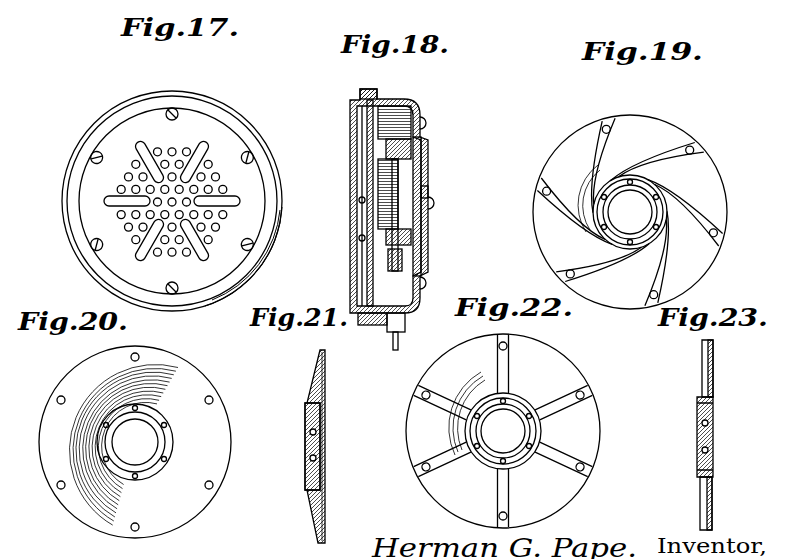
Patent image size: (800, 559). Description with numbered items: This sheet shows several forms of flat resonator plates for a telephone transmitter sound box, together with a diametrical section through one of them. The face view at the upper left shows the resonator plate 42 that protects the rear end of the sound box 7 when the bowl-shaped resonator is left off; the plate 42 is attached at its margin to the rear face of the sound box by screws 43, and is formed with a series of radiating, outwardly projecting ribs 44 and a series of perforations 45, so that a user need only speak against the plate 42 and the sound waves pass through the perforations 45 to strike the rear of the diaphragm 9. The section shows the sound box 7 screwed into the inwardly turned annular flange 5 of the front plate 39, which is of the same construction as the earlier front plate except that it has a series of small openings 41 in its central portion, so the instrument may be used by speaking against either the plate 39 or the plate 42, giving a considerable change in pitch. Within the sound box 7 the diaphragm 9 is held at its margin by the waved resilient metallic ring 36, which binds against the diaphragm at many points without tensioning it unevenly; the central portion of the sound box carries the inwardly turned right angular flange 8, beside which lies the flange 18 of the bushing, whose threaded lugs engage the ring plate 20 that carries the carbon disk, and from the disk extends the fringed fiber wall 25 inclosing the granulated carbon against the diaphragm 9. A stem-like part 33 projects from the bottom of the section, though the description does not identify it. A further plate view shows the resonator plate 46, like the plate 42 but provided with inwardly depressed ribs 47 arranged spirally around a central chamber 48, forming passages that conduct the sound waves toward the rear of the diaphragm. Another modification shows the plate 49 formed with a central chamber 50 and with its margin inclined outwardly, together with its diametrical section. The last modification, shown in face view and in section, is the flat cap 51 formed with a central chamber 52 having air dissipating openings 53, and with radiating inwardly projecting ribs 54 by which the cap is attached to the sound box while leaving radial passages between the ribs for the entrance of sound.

In FIG. 18, the annular flange 5 is at (383, 88).
In FIG. 17, the sound box 7 is at (250, 118).
In FIG. 18, the sound box 7 is at (408, 99).
In FIG. 18, the right angular flange 8 is at (425, 298).
In FIG. 18, the diaphragm 9 is at (370, 157).
In FIG. 18, the flange 18 is at (387, 262).
In FIG. 18, the ring plate 20 is at (398, 218).
In FIG. 18, the fringed wall 25 is at (368, 217).
In FIG. 18, the plug stem 33 is at (398, 338).
In FIG. 18, the resilient metallic ring 36 is at (368, 250).
In FIG. 18, the front plate 39 is at (362, 140).
In FIG. 18, the small openings 41 is at (360, 196).
In FIG. 17, the resonator plate 42 is at (95, 182).
In FIG. 17, the screws 43 is at (143, 126).
In FIG. 18, the screws 43 is at (427, 125).
In FIG. 17, the radiating ribs 44 is at (200, 253).
In FIG. 18, the radiating ribs 44 is at (425, 190).
In FIG. 17, the perforations 45 is at (215, 188).
In FIG. 18, the perforations 45 is at (429, 200).
In FIG. 19, the resonator plate 46 is at (655, 130).
In FIG. 19, the inwardly depressed ribs 47 is at (667, 152).
In FIG. 19, the central chamber 48 is at (630, 212).
In FIG. 20, the plate 49 is at (135, 442).
In FIG. 21, the plate 49 is at (325, 389).
In FIG. 20, the central chamber 50 is at (135, 442).
In FIG. 21, the central chamber 50 is at (318, 440).
In FIG. 22, the cap 51 is at (503, 431).
In FIG. 23, the cap 51 is at (717, 360).
In FIG. 22, the central chamber 52 is at (495, 420).
In FIG. 23, the central chamber 52 is at (702, 433).
In FIG. 22, the air dissipating openings 53 is at (535, 455).
In FIG. 23, the air dissipating openings 53 is at (713, 440).
In FIG. 22, the radiating inwardly projecting ribs 54 is at (553, 460).
In FIG. 23, the radiating inwardly projecting ribs 54 is at (713, 400).